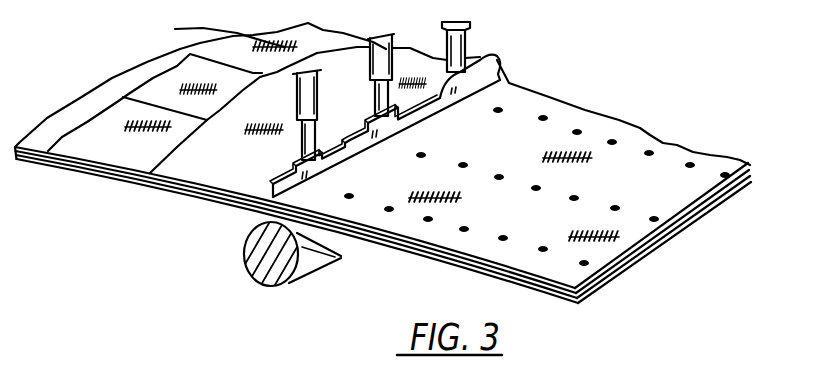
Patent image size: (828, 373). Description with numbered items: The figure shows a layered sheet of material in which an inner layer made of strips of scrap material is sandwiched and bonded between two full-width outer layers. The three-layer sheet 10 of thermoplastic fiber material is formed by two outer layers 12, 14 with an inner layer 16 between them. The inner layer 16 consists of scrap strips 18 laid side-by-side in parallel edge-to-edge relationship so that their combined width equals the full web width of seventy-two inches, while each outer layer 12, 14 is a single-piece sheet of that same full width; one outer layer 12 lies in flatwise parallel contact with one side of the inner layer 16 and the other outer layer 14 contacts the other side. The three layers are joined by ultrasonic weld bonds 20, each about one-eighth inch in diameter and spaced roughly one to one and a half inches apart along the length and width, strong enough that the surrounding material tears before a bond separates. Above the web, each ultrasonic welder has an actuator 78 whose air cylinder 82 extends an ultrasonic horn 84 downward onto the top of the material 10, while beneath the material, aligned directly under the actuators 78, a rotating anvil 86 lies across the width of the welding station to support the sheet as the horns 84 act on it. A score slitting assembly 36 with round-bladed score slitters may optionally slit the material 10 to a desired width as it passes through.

The three-layer sheet 10 is at (143, 117).
The outer layer 12 is at (750, 164).
The outer layer 14 is at (70, 117).
The inner layer 16 is at (750, 171).
The scrap strips 18 is at (657, 255).
The weld bond 20 is at (612, 140).
The score slitting assembly 36 is at (246, 216).
The actuator 78 is at (472, 26).
The air cylinder 82 is at (511, 45).
The ultrasonic horn 84 is at (498, 65).
The rotating anvil 86 is at (341, 258).